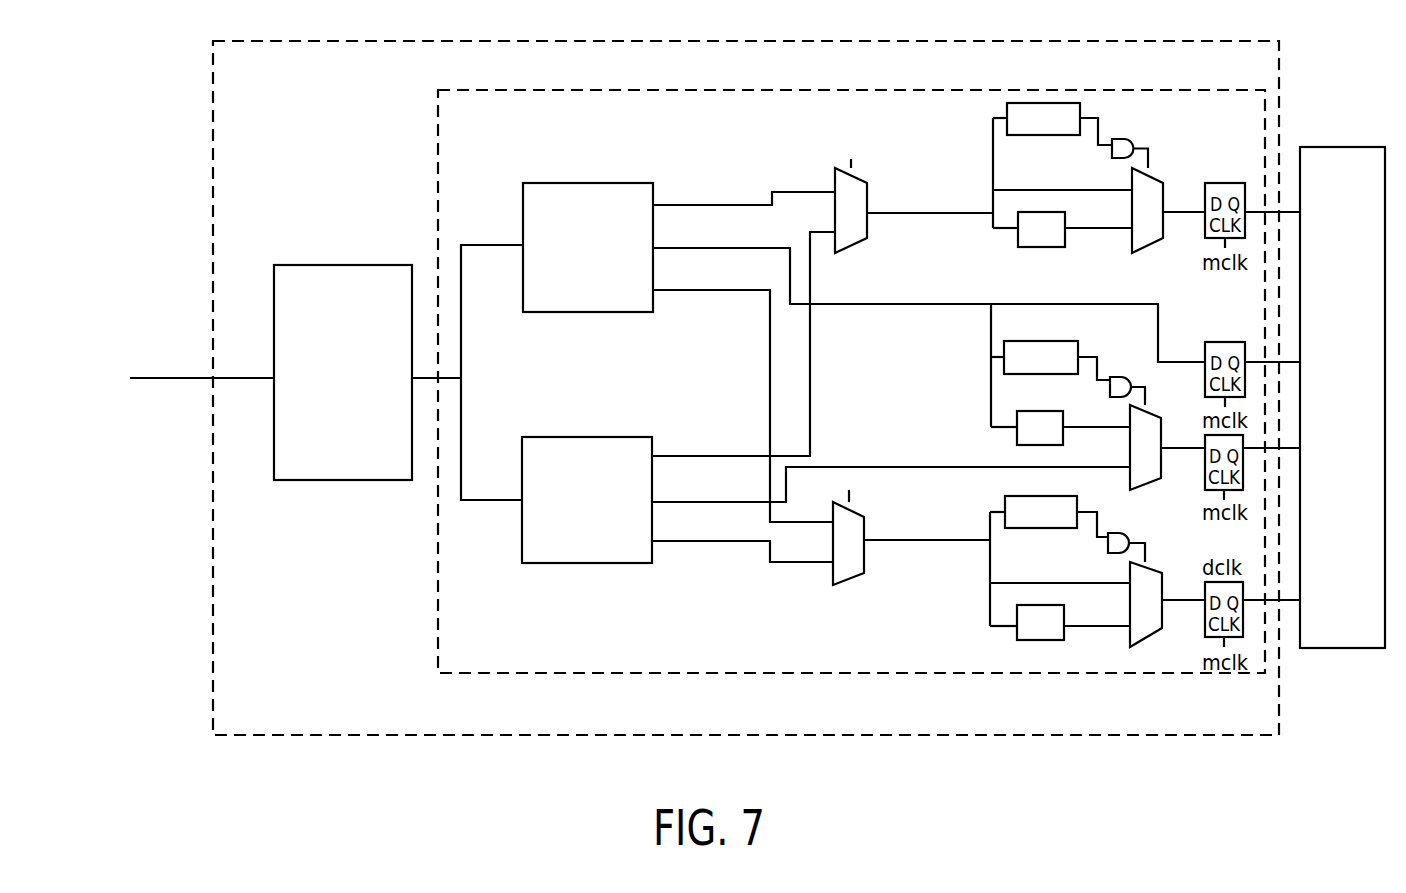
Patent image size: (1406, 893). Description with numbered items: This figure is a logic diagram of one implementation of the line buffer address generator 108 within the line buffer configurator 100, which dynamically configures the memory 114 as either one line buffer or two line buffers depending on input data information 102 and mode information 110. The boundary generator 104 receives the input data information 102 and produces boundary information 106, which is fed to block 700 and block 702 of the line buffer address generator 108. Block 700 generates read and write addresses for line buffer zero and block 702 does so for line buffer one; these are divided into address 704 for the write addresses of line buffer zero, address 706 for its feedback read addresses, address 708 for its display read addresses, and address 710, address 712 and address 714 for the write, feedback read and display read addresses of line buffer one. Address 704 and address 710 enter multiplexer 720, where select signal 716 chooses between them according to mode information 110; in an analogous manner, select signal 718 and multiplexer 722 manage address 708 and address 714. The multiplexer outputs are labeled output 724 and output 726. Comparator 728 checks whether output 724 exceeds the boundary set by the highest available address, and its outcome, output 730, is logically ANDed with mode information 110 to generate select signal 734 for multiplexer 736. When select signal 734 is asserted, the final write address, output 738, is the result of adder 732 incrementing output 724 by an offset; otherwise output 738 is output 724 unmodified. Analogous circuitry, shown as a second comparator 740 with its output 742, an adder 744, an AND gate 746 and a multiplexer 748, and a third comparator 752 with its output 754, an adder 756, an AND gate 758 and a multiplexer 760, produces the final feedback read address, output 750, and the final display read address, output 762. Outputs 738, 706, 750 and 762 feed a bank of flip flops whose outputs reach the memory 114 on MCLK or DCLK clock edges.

The line buffer configurator 100 is at (309, 702).
The input data information 102 is at (202, 362).
The boundary generator 104 is at (324, 417).
The boundary information 106 is at (467, 372).
The line buffer address generator 108 is at (454, 660).
The mode information 110 is at (1112, 153).
The memory 114 is at (1316, 363).
The block 700 is at (571, 288).
The block 702 is at (569, 540).
The address 704 is at (744, 182).
The address 706 is at (929, 291).
The address 708 is at (743, 392).
The address 710 is at (743, 344).
The address 712 is at (891, 484).
The address 714 is at (742, 537).
The select signal 716 is at (855, 151).
The select signal 718 is at (853, 484).
The multiplexer 720 is at (854, 223).
The multiplexer 722 is at (852, 558).
The output 724 is at (999, 173).
The output 726 is at (997, 563).
The comparator 728 is at (1024, 132).
The output 730 is at (1102, 116).
The adder 732 is at (1022, 242).
The select signal 734 is at (1147, 143).
The multiplexer 736 is at (1150, 223).
The output 738 is at (1184, 195).
The third register 740 is at (1022, 371).
The third register output 742 is at (1101, 354).
The fourth register 744 is at (1021, 441).
The second AND gate 746 is at (1149, 387).
The fourth multiplexer 748 is at (1150, 460).
The output 750 is at (1183, 433).
The fifth register 752 is at (1022, 525).
The fifth register output 754 is at (1099, 512).
The sixth register 756 is at (1021, 636).
The third AND gate 758 is at (1148, 544).
The fifth multiplexer 760 is at (1149, 616).
The output 762 is at (1183, 585).